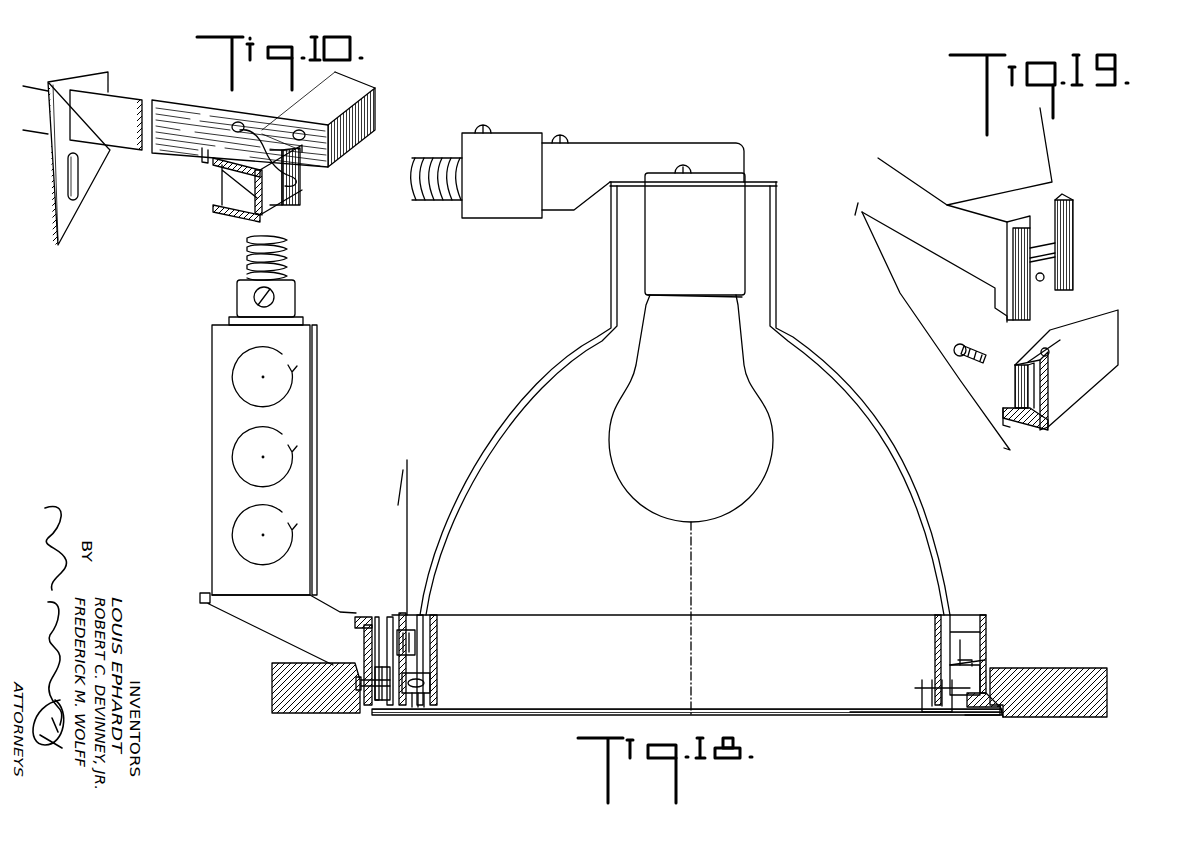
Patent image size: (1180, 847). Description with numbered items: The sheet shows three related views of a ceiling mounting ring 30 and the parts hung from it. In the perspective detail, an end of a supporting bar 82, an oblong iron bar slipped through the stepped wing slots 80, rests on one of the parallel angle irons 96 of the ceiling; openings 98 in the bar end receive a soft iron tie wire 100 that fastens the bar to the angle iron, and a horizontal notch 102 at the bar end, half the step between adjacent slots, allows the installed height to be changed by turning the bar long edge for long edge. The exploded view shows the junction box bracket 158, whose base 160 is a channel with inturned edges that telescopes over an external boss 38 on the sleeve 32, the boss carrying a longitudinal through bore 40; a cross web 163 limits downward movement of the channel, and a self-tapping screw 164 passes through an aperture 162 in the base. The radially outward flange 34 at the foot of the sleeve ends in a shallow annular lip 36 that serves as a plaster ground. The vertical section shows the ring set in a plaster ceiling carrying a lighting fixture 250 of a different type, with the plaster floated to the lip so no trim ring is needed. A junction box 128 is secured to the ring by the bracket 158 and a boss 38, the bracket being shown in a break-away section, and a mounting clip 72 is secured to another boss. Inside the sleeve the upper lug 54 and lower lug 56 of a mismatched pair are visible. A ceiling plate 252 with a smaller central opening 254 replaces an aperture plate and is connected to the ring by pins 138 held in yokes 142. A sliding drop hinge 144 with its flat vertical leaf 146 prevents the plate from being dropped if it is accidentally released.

In FIG. 10, the mounting clip 72 is at (80, 76).
In FIG. 10, the slot 80 is at (80, 197).
In FIG. 10, the supporting bar 82 is at (175, 108).
In FIG. 10, the angle iron 96 is at (268, 208).
In FIG. 10, the opening 98 is at (264, 132).
In FIG. 10, the tie wire 100 is at (288, 198).
In FIG. 10, the notch 102 is at (200, 158).
In FIG. 18, the junction box 128 is at (317, 453).
In FIG. 18, the sliding drop hinge 144 is at (397, 597).
In FIG. 18, the vertical leaf 146 is at (405, 527).
In FIG. 19, the junction box bracket 158 is at (1052, 182).
In FIG. 18, the junction box bracket 158 is at (330, 618).
In FIG. 19, the cross web 163 is at (1046, 252).
In FIG. 18, the cross web 163 is at (357, 652).
In FIG. 18, the lighting fixture 250 is at (937, 493).
In FIG. 19, the mounting ring 30 is at (1122, 318).
In FIG. 18, the mounting ring 30 is at (975, 603).
In FIG. 18, the upper lug 54 is at (950, 640).
In FIG. 19, the sleeve 32 is at (1118, 345).
In FIG. 18, the sleeve 32 is at (986, 645).
In FIG. 18, the pin 138 is at (930, 676).
In FIG. 18, the yoke 142 is at (917, 694).
In FIG. 18, the lower lug 56 is at (975, 678).
In FIG. 19, the flange 34 is at (1040, 428).
In FIG. 18, the flange 34 is at (997, 700).
In FIG. 19, the lip 36 is at (1010, 428).
In FIG. 18, the lip 36 is at (1004, 716).
In FIG. 18, the central opening 254 is at (868, 716).
In FIG. 18, the ceiling plate 252 is at (970, 718).
In FIG. 19, the base 160 is at (1073, 265).
In FIG. 19, the aperture 162 is at (1041, 281).
In FIG. 19, the self-tapping screw 164 is at (966, 340).
In FIG. 19, the through bore 40 is at (1044, 348).
In FIG. 19, the external boss 38 is at (1036, 352).